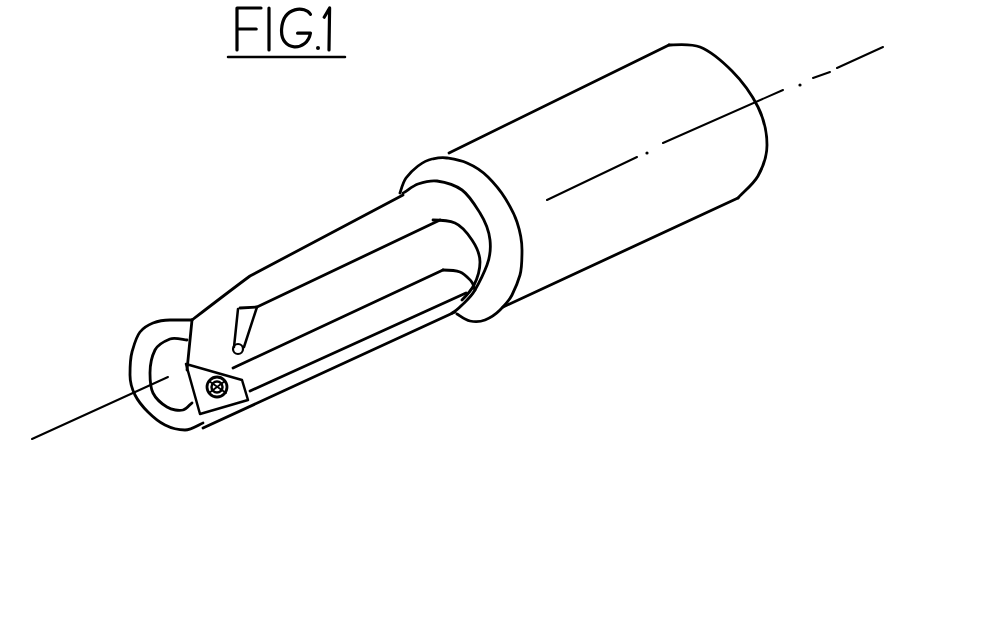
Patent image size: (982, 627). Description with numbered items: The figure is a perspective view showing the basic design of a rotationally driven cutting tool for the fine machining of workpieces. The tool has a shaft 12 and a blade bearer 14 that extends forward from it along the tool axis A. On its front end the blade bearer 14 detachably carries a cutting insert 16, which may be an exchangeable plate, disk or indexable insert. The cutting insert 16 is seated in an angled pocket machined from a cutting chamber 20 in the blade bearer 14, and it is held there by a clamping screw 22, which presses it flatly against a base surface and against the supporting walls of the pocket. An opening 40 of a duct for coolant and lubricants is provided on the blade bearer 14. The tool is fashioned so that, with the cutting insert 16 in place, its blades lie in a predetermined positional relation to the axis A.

The shaft 12 is at (647, 232).
The blade bearer 14 is at (296, 264).
The cutting insert 16 is at (222, 424).
The cutting chamber 20 is at (300, 353).
The clamping screw 22 is at (203, 410).
The opening of a duct for coolant and lubricants 40 is at (241, 303).
The axis A is at (773, 97).